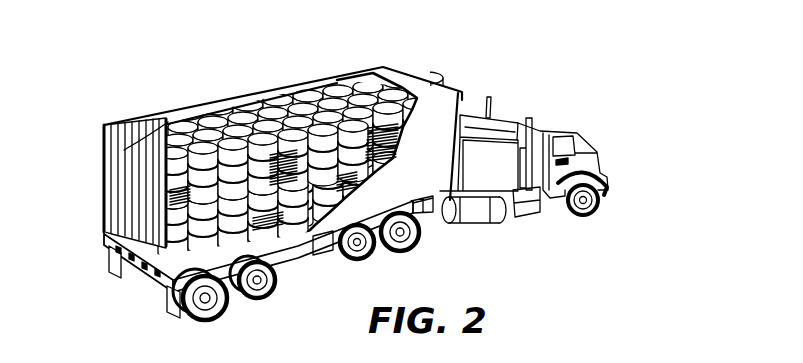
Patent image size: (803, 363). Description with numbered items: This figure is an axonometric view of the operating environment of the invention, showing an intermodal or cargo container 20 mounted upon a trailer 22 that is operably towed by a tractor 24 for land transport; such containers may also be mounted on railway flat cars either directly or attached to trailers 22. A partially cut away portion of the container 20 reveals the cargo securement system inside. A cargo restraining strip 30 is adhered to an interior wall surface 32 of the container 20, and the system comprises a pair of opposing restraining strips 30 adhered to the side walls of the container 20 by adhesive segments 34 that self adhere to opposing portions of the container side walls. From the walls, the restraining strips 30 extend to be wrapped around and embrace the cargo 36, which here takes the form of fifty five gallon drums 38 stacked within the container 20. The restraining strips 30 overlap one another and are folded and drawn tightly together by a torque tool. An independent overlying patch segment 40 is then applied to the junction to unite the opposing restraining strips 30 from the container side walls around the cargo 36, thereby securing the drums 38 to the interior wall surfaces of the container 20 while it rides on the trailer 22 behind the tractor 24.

The intermodal cargo container 20 is at (410, 76).
The trailer 22 is at (107, 243).
The tractor 24 is at (600, 157).
The cargo restraining strip 30 is at (277, 274).
The interior wall surface 32 is at (124, 124).
The adhesive segment 34 is at (394, 141).
The cargo 36 is at (156, 278).
The fifty five gallon drum 38 is at (234, 103).
The overlying patch segment 40 is at (165, 128).